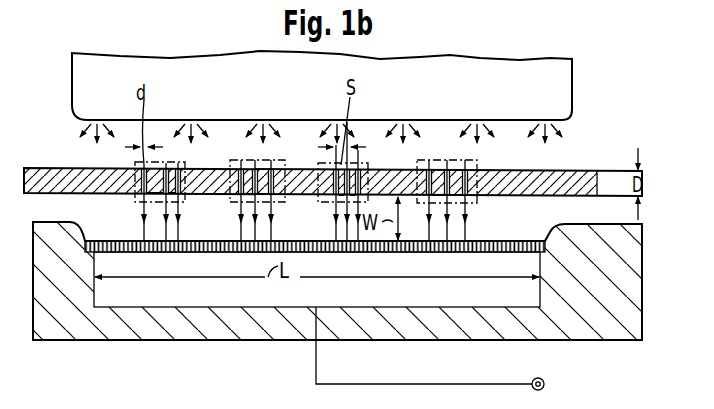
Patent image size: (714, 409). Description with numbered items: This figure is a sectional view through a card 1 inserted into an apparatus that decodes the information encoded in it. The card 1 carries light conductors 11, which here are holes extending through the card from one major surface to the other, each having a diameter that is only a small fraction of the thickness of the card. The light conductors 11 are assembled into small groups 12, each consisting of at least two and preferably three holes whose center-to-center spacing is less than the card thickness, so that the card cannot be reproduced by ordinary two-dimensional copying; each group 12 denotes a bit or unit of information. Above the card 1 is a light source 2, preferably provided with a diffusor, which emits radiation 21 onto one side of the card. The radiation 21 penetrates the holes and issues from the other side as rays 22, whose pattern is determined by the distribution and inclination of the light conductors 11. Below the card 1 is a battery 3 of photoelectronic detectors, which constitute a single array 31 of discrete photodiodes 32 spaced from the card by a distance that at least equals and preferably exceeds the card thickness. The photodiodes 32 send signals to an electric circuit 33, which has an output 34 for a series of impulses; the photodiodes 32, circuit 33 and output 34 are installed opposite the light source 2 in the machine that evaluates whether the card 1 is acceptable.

The card 1 is at (573, 169).
The light source 2 is at (560, 77).
The battery of detectors 3 is at (645, 226).
The light conductor 11 is at (138, 194).
The group 12 is at (137, 163).
The radiation 21 is at (90, 126).
The rays 22 is at (142, 227).
The array 31 is at (182, 257).
The photodiode 32 is at (218, 252).
The electric circuit 33 is at (241, 294).
The output 34 is at (544, 380).